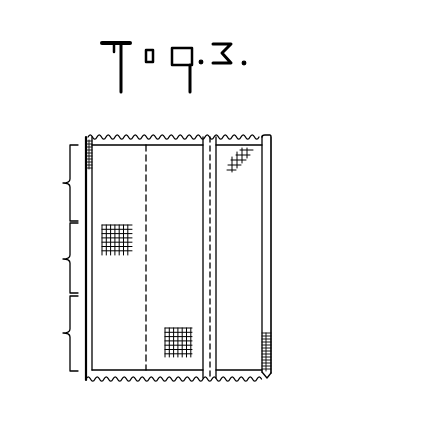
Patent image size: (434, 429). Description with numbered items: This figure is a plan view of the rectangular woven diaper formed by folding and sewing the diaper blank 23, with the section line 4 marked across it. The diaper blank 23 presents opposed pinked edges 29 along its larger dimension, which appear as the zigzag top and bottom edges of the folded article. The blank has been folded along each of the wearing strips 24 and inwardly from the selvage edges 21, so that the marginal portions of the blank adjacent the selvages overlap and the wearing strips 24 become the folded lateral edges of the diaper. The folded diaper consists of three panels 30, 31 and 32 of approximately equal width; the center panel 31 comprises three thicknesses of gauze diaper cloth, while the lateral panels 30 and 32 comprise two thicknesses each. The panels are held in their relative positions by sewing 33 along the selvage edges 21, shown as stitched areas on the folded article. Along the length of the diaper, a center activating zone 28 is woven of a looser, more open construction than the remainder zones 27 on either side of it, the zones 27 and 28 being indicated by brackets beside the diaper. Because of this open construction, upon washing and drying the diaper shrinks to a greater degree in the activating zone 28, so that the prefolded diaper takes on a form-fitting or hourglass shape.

The section line 4- 4 is at (29, 248).
The selvage edge 21 is at (214, 293).
The diaper blank 23 is at (252, 355).
The wearing strip 24 is at (88, 136).
The remainder zones 27 is at (63, 183).
The activating zone 28 is at (63, 259).
The pinked edge 29 is at (133, 156).
The lateral panel 30 is at (149, 151).
The center panel 31 is at (184, 153).
The lateral panel 32 is at (240, 160).
The sewing 33 is at (141, 302).